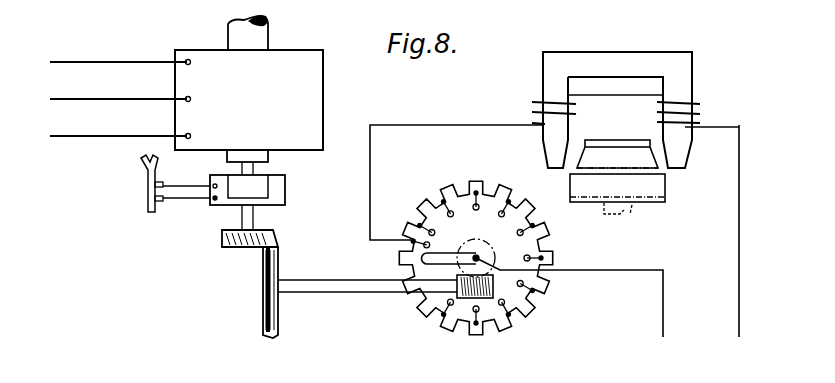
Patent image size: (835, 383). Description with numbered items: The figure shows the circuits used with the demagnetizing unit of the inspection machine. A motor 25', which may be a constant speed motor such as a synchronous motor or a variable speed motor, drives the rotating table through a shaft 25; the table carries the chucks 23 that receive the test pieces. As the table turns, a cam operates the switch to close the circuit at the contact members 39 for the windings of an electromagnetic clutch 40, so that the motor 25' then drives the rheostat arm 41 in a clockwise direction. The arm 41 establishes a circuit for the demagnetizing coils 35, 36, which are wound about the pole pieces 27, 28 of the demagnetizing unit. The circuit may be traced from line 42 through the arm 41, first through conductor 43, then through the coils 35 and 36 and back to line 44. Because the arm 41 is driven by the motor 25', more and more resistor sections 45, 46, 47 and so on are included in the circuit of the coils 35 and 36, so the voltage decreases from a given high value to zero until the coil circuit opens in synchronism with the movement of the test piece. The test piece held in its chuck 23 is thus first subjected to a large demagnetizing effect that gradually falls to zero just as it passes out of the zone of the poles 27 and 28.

The shaft 25 is at (267, 32).
The motor 25' is at (268, 100).
The contact members 39 is at (165, 185).
The electromagnetic clutch 40 is at (285, 191).
The conductor 43 is at (432, 125).
The line 44 is at (739, 315).
The line 42 is at (663, 317).
The rheostat arm 41 is at (456, 252).
The resistor section 45 is at (409, 224).
The resistor section 46 is at (418, 205).
The resistor section 47 is at (437, 186).
The pole piece 28 is at (548, 155).
The pole piece 27 is at (685, 162).
The demagnetizing coil 35 is at (574, 114).
The demagnetizing coil 36 is at (660, 104).
The chuck 23 is at (642, 206).